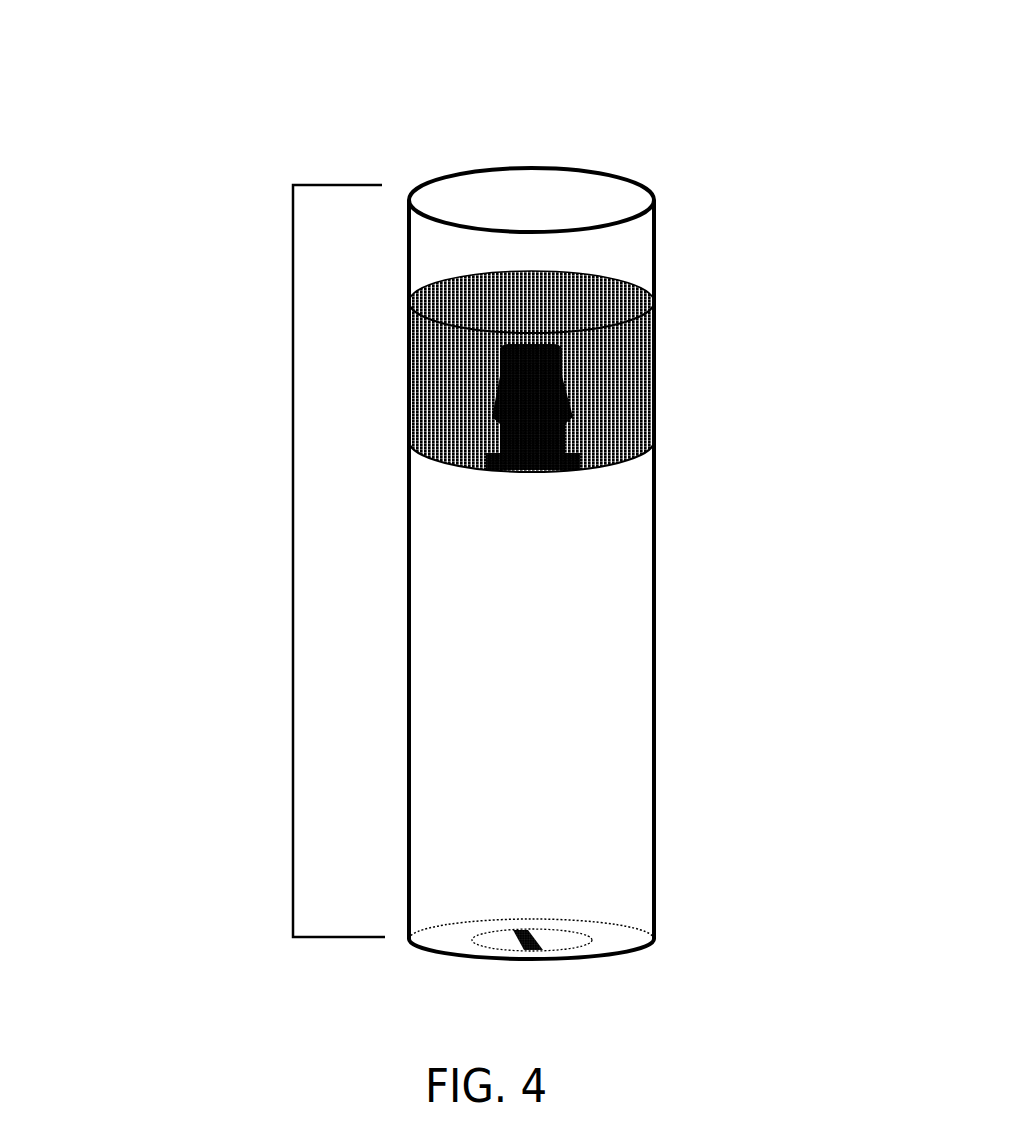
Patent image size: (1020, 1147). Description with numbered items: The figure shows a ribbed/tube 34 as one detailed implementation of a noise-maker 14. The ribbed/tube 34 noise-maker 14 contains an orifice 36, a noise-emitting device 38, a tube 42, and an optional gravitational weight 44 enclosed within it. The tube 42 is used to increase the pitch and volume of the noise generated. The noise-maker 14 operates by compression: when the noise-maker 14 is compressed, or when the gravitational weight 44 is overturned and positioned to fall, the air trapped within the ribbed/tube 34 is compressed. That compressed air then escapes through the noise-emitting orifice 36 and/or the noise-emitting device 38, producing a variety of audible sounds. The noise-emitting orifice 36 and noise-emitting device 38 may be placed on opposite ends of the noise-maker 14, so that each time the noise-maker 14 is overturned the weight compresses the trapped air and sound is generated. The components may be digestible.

The noise-maker 14 is at (308, 136).
The ribbed/tube 34 is at (293, 537).
The orifice 36 is at (492, 943).
The noise-emitting device 38 is at (577, 473).
The tube 42 is at (665, 743).
The optional gravitational weight 44 is at (630, 367).